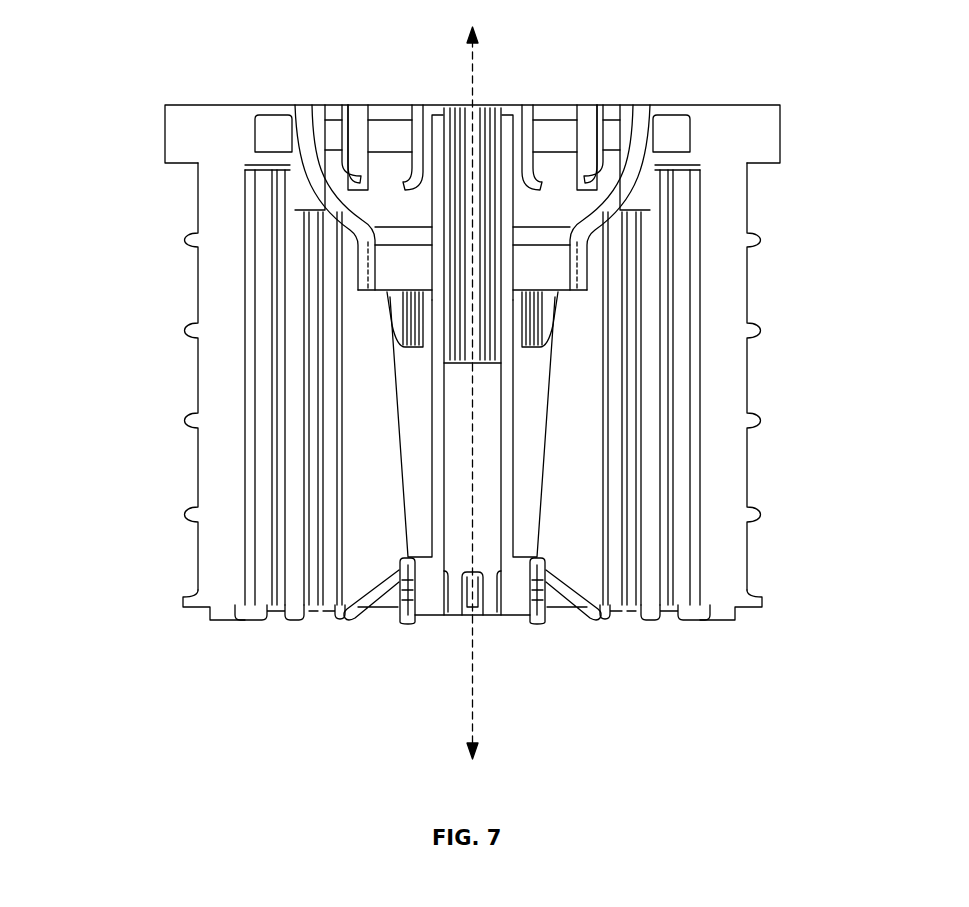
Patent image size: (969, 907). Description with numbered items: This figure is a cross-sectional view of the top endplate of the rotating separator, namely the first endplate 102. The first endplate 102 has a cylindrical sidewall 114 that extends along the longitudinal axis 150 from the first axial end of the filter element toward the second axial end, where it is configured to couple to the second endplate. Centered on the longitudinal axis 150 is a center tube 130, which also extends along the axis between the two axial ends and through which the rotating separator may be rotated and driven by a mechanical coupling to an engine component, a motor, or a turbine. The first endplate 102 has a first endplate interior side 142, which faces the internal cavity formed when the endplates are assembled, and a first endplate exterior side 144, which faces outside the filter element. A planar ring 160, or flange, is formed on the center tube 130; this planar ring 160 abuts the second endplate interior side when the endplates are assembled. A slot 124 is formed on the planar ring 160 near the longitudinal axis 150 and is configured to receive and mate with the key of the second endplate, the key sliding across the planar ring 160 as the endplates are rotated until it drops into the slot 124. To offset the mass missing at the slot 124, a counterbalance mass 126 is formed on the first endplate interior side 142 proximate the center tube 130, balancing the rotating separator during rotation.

The first endplate 102 is at (755, 137).
The sidewall 114 is at (728, 380).
The slot 124 is at (396, 618).
The counterbalance mass 126 is at (368, 263).
The center tube 130 is at (442, 520).
The first endplate interior side 142 is at (690, 638).
The first endplate exterior side 144 is at (666, 66).
The longitudinal axis 150 is at (476, 60).
The planar ring 160 is at (528, 568).